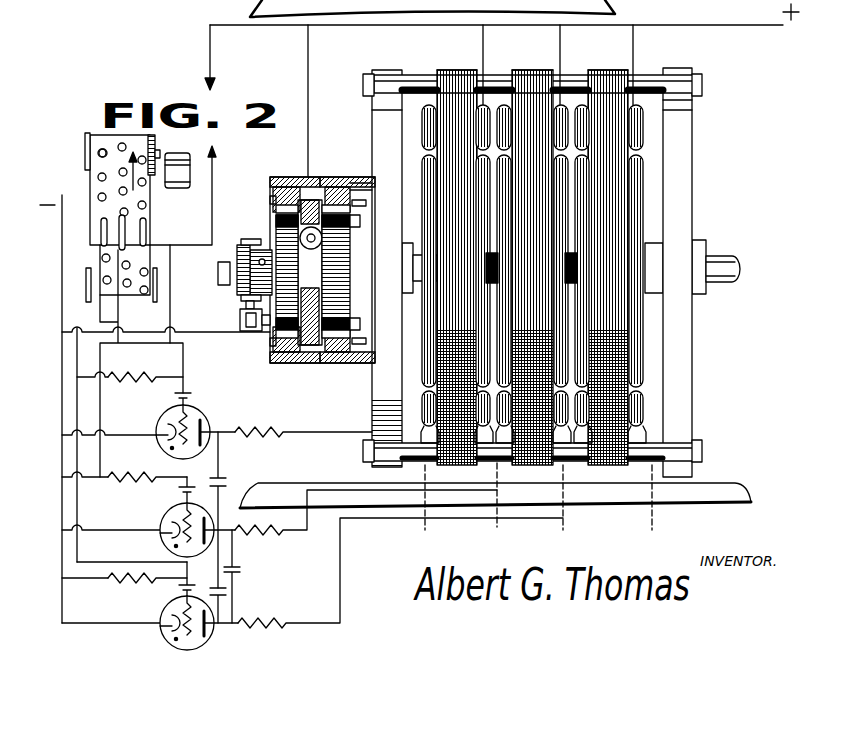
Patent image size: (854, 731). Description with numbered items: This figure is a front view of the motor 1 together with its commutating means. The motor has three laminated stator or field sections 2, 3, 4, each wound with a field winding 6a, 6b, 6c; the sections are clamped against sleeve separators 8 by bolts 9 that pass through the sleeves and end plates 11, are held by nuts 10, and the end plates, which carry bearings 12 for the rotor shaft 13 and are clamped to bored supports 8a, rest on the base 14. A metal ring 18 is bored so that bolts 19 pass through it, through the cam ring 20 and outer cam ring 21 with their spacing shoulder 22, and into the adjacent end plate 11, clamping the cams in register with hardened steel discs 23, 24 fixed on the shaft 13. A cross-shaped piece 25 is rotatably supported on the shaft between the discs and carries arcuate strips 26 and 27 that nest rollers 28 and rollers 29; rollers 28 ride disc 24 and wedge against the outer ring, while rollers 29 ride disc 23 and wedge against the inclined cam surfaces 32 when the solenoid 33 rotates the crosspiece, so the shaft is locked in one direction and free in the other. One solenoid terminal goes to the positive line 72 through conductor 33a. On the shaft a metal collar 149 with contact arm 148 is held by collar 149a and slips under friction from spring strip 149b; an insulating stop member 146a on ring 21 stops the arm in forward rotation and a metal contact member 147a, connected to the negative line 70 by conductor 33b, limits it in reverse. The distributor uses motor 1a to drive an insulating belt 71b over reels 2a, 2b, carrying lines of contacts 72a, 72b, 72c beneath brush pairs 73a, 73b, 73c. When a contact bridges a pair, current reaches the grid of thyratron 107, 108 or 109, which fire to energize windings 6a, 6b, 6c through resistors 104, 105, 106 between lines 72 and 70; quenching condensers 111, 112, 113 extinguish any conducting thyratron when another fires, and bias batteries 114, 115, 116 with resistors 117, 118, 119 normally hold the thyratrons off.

The motor 1 is at (693, 120).
The belt drive motor 1a is at (180, 170).
The first stator or field section 2 is at (452, 70).
The reel 2a is at (85, 159).
The reel 2b is at (86, 285).
The second stator or field section 3 is at (530, 70).
The third stator or field section 4 is at (612, 70).
The field winding 6a is at (422, 396).
The field winding 6b is at (502, 105).
The field winding 6c is at (645, 212).
The sleeve separator 8 is at (422, 75).
The bored support 8a is at (534, 512).
The bolt 9 is at (662, 46).
The nut 10 is at (366, 76).
The end plate 11 is at (372, 110).
The bearing 12 is at (772, 22).
The rotor shaft 13 is at (218, 276).
The base 14 is at (282, 483).
The metal ring 18 is at (368, 177).
The bolt 19 is at (356, 363).
The cam ring 20 is at (352, 198).
The outer cam ring 21 is at (273, 192).
The spacing shoulder 22 is at (312, 363).
The hardened steel disc 23 is at (350, 300).
The hardened steel disc 24 is at (240, 320).
The cross-shaped piece 25 is at (276, 236).
The arcuate strip 26 is at (276, 209).
The arcuate strip 27 is at (350, 209).
The roller 28 is at (270, 200).
The roller 29 is at (360, 222).
The cam surface 32 is at (362, 272).
The solenoid 33 is at (320, 272).
The conductor 33a is at (308, 70).
The conductor 33b is at (148, 325).
The negative line 70 is at (62, 238).
The belt or tape 71b is at (92, 205).
The positive line 72 is at (216, 168).
The contact 72a is at (155, 140).
The contact 72b is at (119, 144).
The contact 72c is at (99, 152).
The brush pair 73a is at (146, 228).
The brush pair 73b is at (125, 236).
The brush pair 73c is at (101, 228).
The resistor 104 is at (252, 428).
The resistor 105 is at (268, 534).
The resistor 106 is at (282, 618).
The thyratron 107 is at (204, 414).
The thyratron 108 is at (160, 521).
The thyratron 109 is at (166, 646).
The quenching condenser 111 is at (214, 476).
The quenching condenser 112 is at (216, 586).
The quenching condenser 113 is at (242, 569).
The bias battery 114 is at (175, 396).
The bias battery 115 is at (179, 489).
The bias battery 116 is at (179, 590).
The resistor 117 is at (120, 374).
The resistor 118 is at (125, 480).
The resistor 119 is at (135, 588).
The stop member 146a is at (262, 322).
The metal contact member 147a is at (246, 305).
The contact arm 148 is at (240, 300).
The metal collar 149 is at (250, 268).
The collar 149a is at (241, 298).
The spring strip 149b is at (241, 243).